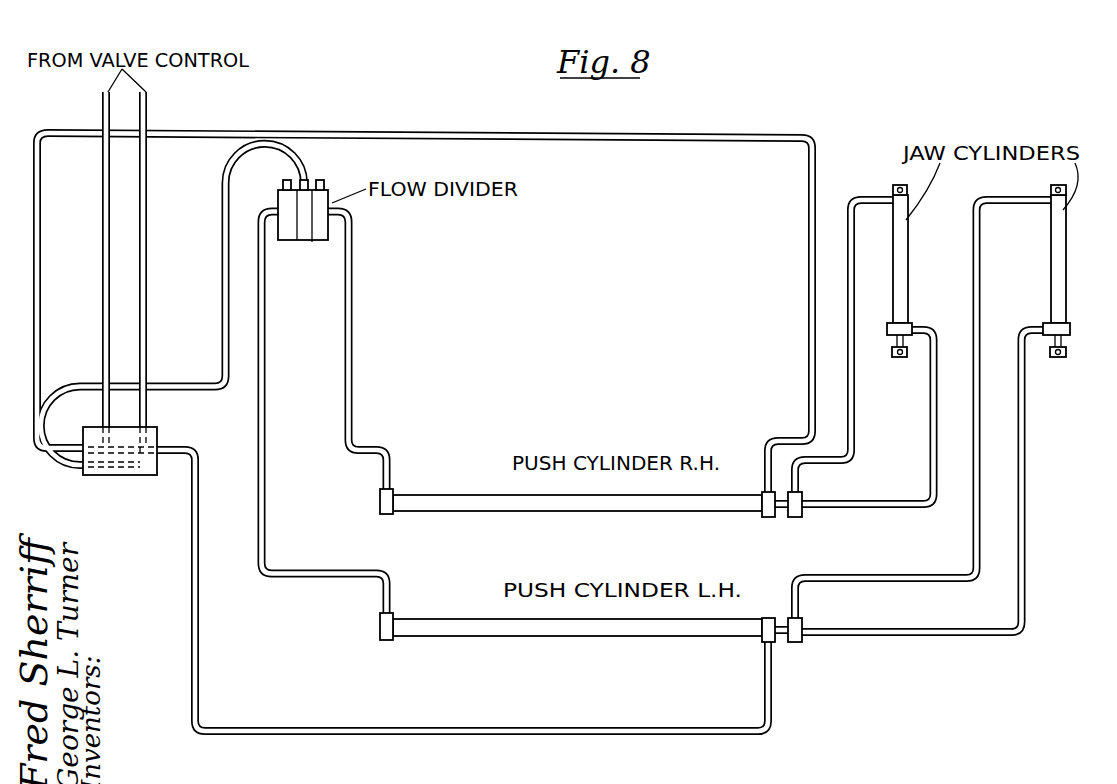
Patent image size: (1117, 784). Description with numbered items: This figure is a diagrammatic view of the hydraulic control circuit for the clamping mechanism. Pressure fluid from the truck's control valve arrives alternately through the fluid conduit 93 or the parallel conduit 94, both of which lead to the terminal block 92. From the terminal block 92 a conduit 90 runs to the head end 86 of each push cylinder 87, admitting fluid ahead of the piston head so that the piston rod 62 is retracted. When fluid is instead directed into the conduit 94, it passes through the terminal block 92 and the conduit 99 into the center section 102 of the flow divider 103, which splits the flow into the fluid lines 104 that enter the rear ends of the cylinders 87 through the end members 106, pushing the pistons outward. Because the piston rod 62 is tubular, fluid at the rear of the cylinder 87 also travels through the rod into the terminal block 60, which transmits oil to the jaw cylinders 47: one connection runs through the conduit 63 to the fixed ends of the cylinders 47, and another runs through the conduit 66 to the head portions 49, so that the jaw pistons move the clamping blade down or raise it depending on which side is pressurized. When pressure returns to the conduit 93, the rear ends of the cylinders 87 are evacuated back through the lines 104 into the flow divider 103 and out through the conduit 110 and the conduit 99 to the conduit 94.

The jaw actuating cylinder 47 is at (906, 298).
The head portion of the cylinder 49 is at (892, 332).
The terminal block member 60 is at (796, 510).
The piston rod 62 is at (780, 508).
The conduit 63 is at (876, 198).
The conduit 66 is at (930, 405).
The head end of the cylinder 86 is at (764, 508).
The cylinder 87 is at (431, 497).
The conduit 90 is at (808, 312).
The terminal block 92 is at (148, 468).
The fluid conduit 93 is at (102, 224).
The conduit 94 is at (146, 253).
The conduit 99 is at (70, 387).
The center section of the flow divider 102 is at (312, 196).
The flow divider 103 is at (316, 246).
The fluid line 104 is at (345, 390).
The end member 106 is at (380, 500).
The conduit 110 is at (223, 180).